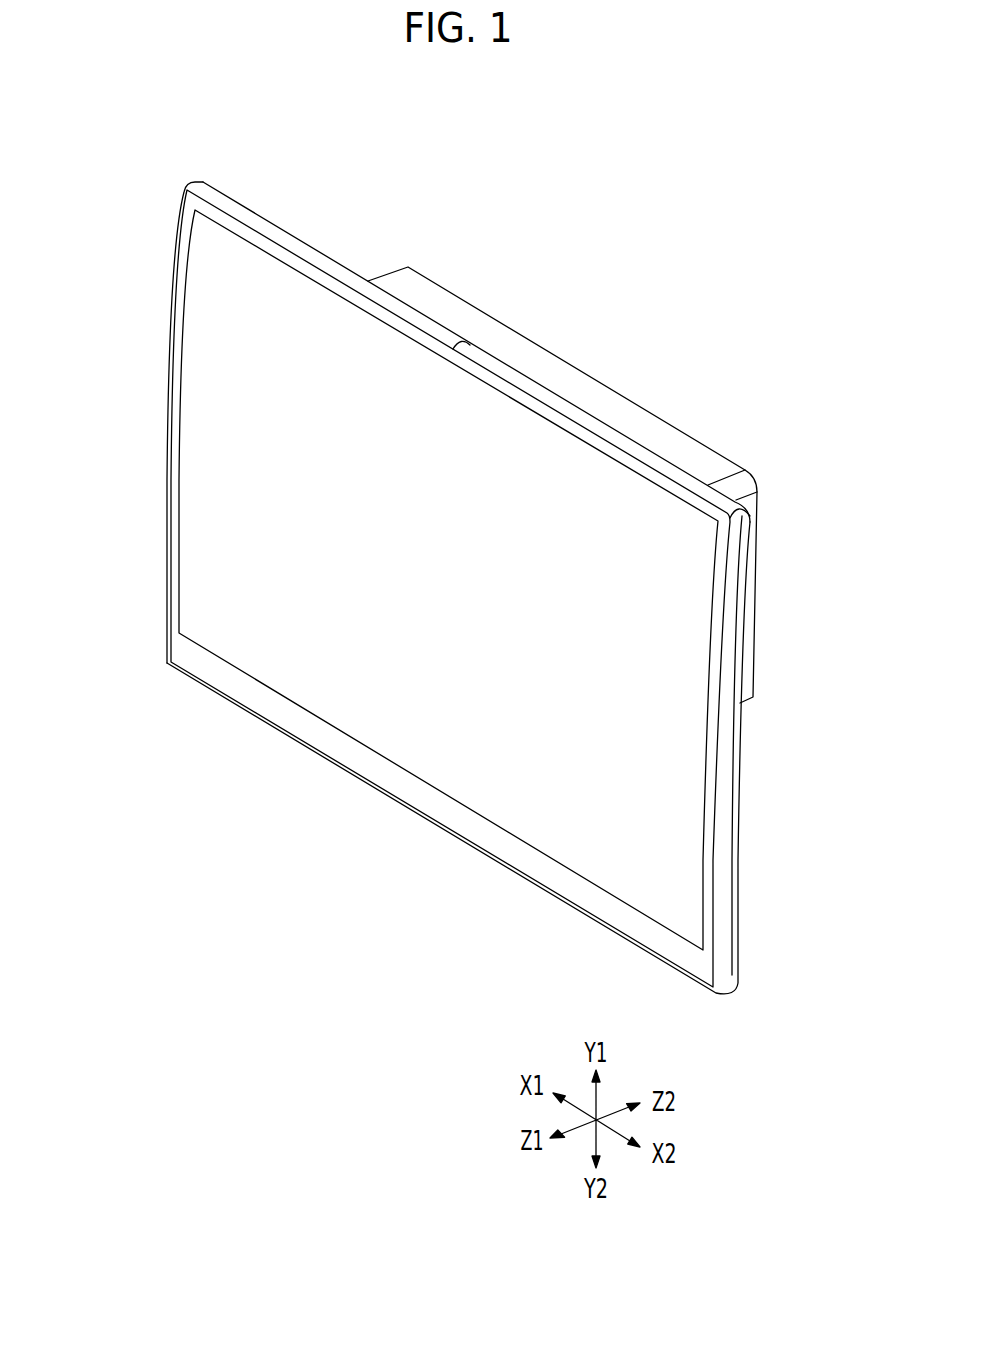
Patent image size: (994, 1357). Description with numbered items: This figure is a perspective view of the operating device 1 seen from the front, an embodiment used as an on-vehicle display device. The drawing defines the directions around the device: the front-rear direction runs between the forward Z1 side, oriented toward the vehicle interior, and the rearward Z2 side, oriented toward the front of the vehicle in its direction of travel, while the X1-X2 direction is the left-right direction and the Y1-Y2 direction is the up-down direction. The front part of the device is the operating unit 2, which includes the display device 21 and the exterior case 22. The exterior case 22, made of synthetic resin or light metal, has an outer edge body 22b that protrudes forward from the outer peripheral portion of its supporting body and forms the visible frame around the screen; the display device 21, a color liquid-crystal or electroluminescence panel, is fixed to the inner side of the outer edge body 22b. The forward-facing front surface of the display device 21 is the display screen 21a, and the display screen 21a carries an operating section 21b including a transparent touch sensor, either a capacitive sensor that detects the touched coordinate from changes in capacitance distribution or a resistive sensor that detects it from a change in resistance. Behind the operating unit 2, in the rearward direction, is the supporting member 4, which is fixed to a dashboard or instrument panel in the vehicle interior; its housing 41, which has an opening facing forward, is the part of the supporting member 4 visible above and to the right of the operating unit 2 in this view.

The operating device 1 is at (524, 230).
The operating unit 2 is at (742, 901).
The display device 21 is at (165, 485).
The display screen 21a is at (207, 547).
The operating section 21b is at (208, 598).
The exterior case 22 is at (343, 262).
The outer edge body 22b is at (273, 226).
The supporting member 4 is at (545, 365).
The housing 41 is at (633, 423).